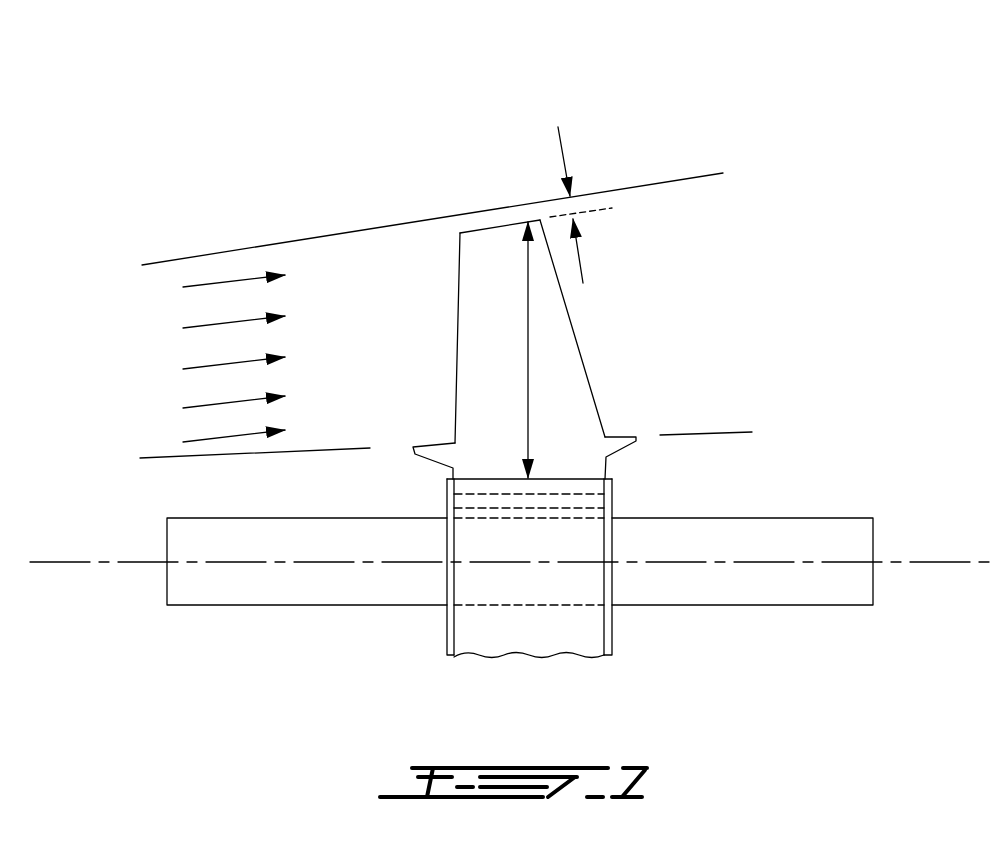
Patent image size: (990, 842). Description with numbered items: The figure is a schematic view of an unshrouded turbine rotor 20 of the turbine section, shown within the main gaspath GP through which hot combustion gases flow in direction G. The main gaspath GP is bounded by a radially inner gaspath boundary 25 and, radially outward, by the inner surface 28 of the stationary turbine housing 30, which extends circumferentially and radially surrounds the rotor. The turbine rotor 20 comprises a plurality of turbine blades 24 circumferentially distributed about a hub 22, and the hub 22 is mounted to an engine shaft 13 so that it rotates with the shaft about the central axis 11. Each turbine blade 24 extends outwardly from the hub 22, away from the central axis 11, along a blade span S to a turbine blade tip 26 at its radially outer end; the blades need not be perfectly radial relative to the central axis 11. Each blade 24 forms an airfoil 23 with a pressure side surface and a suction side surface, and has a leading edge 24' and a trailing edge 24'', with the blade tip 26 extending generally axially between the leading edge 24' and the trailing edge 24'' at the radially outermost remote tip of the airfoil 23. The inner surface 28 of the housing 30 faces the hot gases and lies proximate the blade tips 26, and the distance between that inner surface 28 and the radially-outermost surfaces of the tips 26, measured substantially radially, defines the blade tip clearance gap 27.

The turbine housing 30 is at (270, 240).
The inner surface 28 is at (370, 228).
The blade tip clearance gap 27 is at (564, 147).
The turbine blade tips 26 is at (490, 224).
The leading edge 24' is at (432, 284).
The trailing edge 24'' is at (670, 328).
The turbine blades 24 is at (599, 405).
The turbine rotor 20 is at (603, 269).
The airfoil 23 is at (507, 415).
The hub 22 is at (583, 503).
The engine shaft 13 is at (823, 537).
The central axis 11 is at (932, 562).
The radially inner gaspath boundary 25 is at (310, 450).
The blade span S is at (528, 350).
The direction of hot combustion gas flow G is at (213, 327).
The main gaspath GP is at (357, 347).